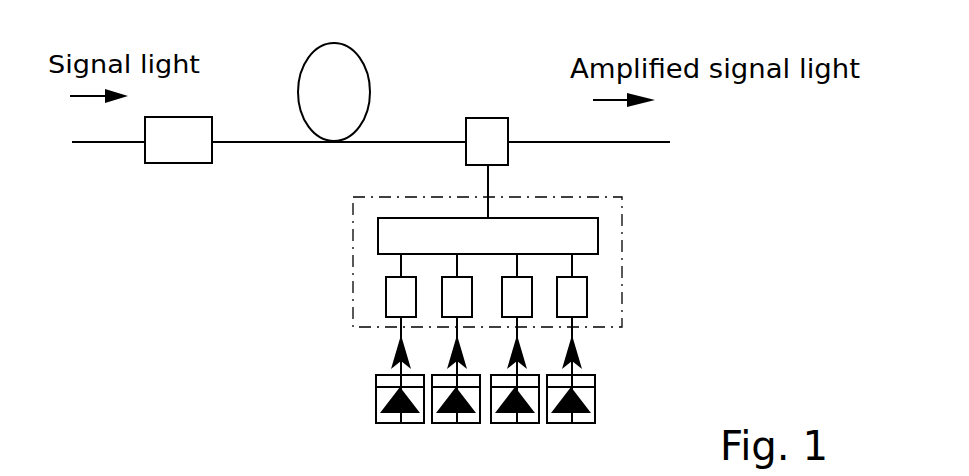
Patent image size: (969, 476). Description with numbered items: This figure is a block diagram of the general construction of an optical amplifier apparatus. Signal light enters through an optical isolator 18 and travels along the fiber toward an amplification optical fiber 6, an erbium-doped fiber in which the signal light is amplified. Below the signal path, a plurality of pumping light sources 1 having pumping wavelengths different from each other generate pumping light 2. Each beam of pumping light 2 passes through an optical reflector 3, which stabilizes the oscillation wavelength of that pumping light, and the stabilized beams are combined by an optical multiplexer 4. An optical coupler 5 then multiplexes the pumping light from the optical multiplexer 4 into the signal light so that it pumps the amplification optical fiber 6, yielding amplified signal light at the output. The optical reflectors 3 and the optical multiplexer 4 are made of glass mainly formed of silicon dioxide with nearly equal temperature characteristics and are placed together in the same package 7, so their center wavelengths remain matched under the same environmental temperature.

The pumping light source 1 is at (596, 394).
The pumping light 2 is at (580, 349).
The optical reflector 3 is at (587, 298).
The optical multiplexer 4 is at (598, 232).
The optical coupler 5 is at (480, 118).
The amplification optical fiber 6 is at (357, 52).
The package 7 is at (352, 250).
The optical isolator 18 is at (145, 150).